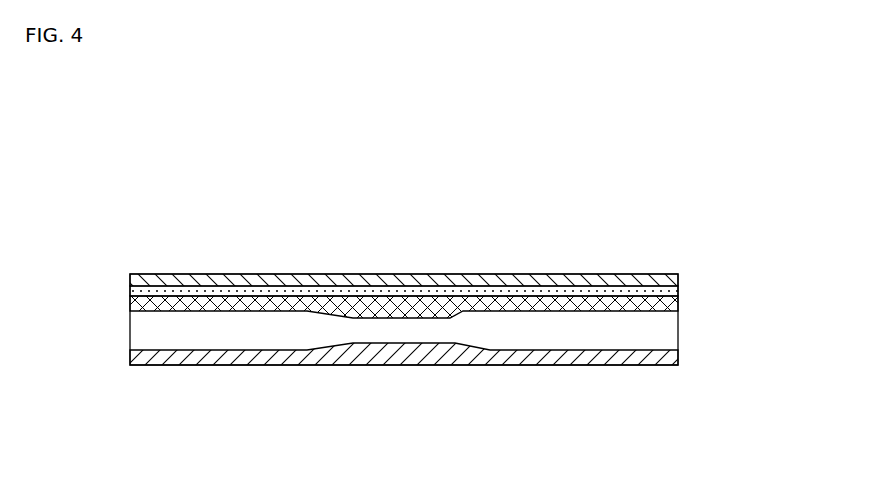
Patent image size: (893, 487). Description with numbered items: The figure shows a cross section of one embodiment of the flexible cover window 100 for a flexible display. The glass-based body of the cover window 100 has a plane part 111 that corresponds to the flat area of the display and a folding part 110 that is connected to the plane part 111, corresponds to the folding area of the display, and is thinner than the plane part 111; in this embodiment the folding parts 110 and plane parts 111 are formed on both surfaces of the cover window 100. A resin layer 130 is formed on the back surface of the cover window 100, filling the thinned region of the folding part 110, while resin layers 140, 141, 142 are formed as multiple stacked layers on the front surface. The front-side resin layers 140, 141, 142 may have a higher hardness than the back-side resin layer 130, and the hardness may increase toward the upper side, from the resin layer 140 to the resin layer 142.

The flexible cover window 100 is at (138, 202).
The folding part 110 is at (440, 345).
The plane part 111 is at (592, 348).
The resin layer 130 is at (387, 365).
The resin layer 140 is at (678, 305).
The resin layer 141 is at (678, 287).
The resin layer 142 is at (678, 270).